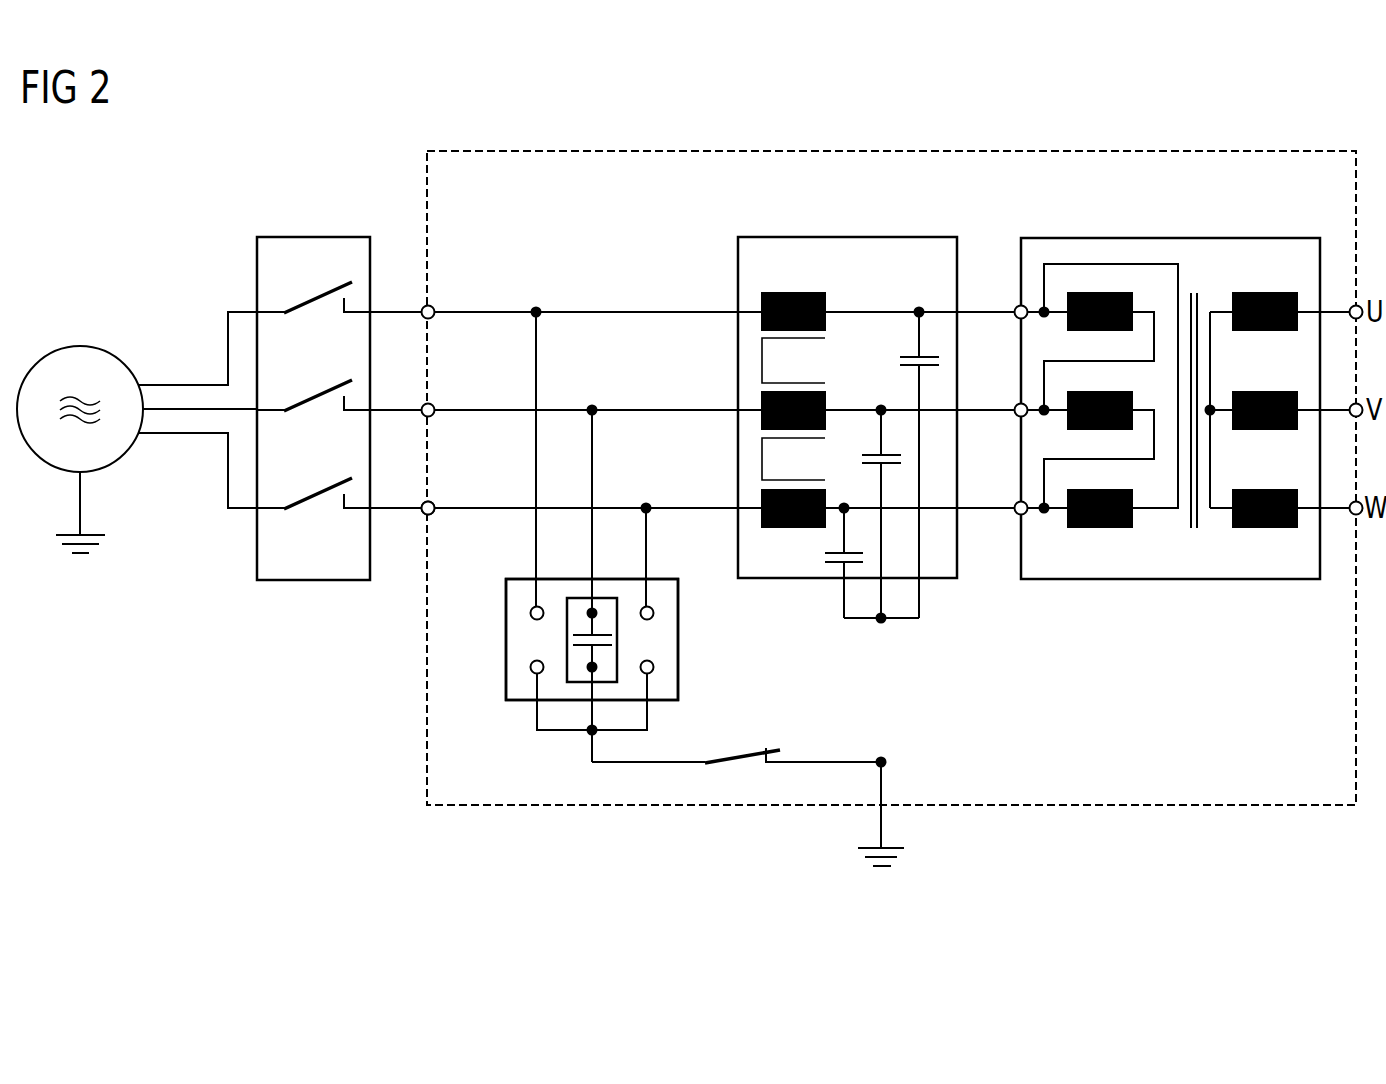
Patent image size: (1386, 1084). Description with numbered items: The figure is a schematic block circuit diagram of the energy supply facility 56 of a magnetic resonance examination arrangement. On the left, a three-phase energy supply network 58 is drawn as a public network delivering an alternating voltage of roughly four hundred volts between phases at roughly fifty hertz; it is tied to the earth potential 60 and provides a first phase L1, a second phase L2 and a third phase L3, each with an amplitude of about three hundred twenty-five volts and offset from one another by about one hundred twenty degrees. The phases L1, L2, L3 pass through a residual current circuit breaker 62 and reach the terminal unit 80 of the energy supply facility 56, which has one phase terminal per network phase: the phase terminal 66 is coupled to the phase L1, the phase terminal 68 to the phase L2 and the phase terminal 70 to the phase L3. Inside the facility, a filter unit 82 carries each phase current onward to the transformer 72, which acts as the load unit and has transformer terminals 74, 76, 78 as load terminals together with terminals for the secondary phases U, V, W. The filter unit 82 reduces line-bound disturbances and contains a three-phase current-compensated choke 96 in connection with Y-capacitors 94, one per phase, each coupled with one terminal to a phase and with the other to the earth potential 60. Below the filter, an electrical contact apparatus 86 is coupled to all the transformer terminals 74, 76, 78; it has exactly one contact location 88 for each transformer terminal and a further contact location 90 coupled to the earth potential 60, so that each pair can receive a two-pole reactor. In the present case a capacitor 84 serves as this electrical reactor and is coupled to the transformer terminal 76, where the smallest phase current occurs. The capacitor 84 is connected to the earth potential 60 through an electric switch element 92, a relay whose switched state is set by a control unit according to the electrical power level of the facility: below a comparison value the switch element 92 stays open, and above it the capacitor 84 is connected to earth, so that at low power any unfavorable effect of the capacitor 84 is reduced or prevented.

The energy supply facility 56 is at (483, 807).
The three-phase energy supply network 58 is at (80, 346).
The earth potential 60 is at (80, 556).
The residual current circuit breaker 62 is at (315, 237).
The phase terminal 66 is at (434, 307).
The phase terminal 68 is at (434, 405).
The phase terminal 70 is at (434, 503).
The transformer 72 is at (1172, 238).
The transformer terminal 74 is at (1015, 308).
The transformer terminal 76 is at (1015, 405).
The transformer terminal 78 is at (1015, 503).
The terminal unit 80 is at (427, 513).
The filter unit 82 is at (847, 237).
The capacitor 84 is at (612, 634).
The electrical contact apparatus 86 is at (588, 676).
The contact location 88 is at (679, 608).
The further contact location 90 is at (531, 667).
The electric switch element 92 is at (742, 752).
The Y-capacitor 94 is at (903, 357).
The three-phase current-compensated choke 96 is at (795, 290).
The first phase L1 is at (202, 383).
The second phase L2 is at (167, 407).
The third phase L3 is at (183, 436).